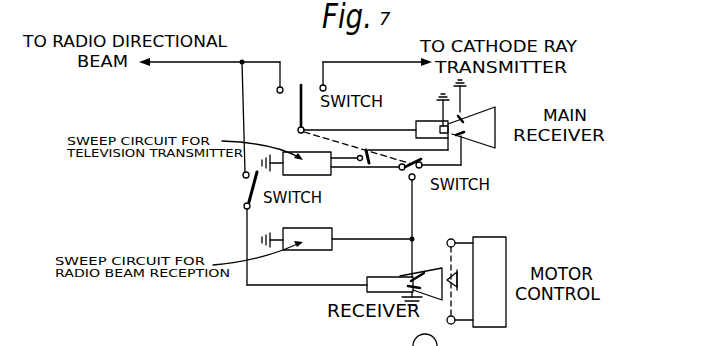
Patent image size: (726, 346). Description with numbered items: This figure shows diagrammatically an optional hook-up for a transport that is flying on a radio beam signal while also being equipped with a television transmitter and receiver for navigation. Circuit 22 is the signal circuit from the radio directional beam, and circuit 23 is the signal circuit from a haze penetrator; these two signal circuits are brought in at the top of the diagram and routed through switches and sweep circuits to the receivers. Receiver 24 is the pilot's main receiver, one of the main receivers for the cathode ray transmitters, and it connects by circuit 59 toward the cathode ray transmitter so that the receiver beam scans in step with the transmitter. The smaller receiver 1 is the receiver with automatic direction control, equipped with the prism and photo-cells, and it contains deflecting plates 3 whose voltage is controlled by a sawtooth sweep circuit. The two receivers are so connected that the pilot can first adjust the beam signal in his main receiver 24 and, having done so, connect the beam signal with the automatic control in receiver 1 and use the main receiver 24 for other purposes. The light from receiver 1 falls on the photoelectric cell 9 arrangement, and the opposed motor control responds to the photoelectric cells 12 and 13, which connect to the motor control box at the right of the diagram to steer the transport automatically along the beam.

The signal circuit from the radio directional beam 22 is at (198, 62).
The signal circuit from a haze penetrator 23 is at (368, 62).
The circuit 59 is at (421, 63).
The main receiver 24 is at (482, 110).
The receiver with automatic direction control 1 is at (383, 278).
The deflecting plates 3 is at (419, 277).
The photoelectric cell 9 is at (447, 270).
The photoelectric cell 12 is at (451, 238).
The photoelectric cell 13 is at (455, 323).